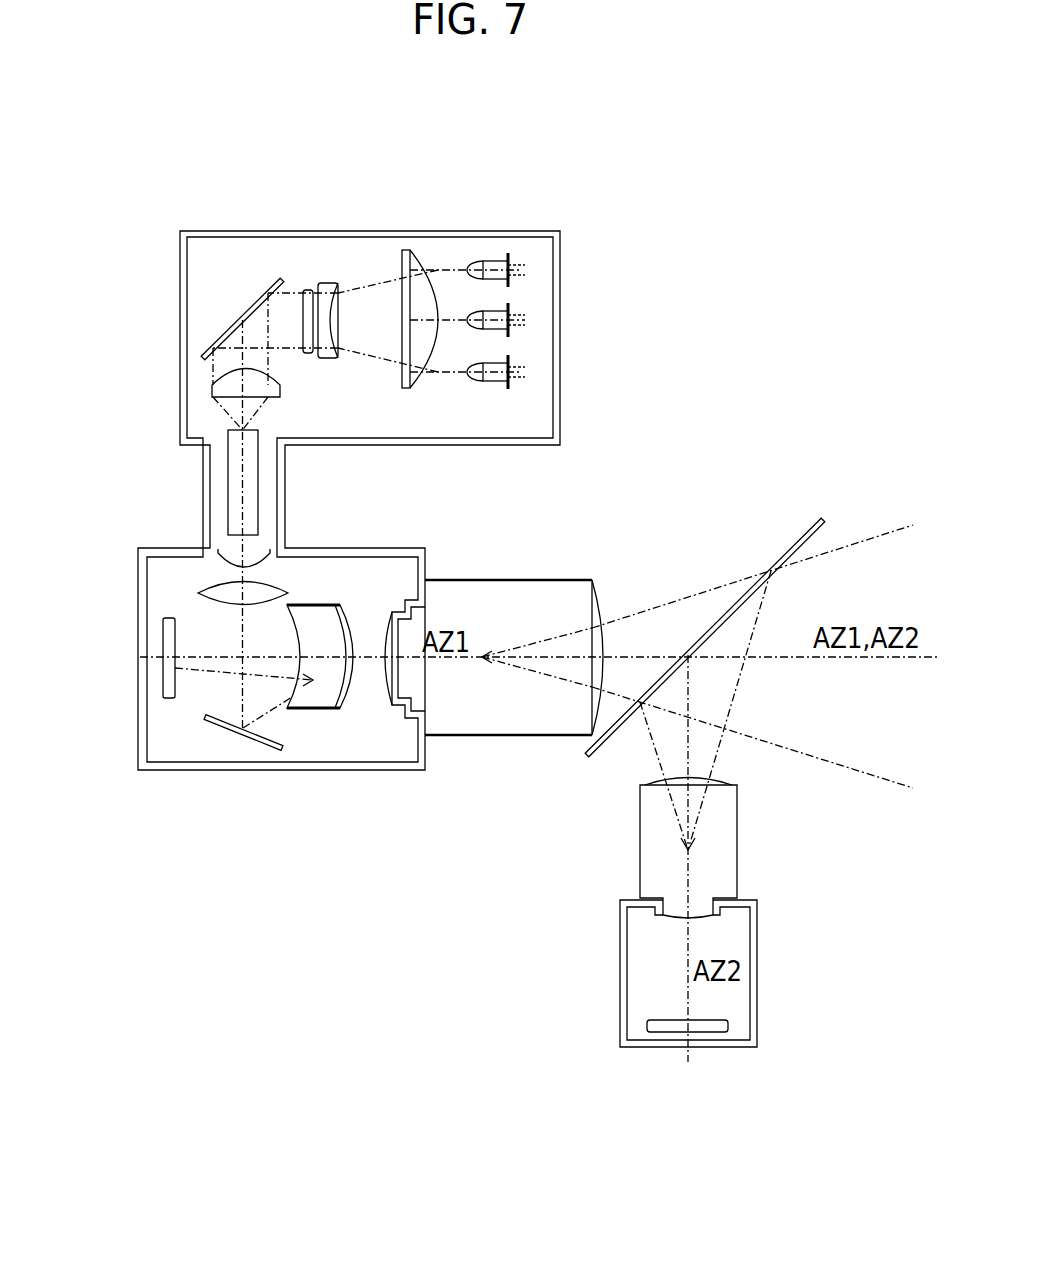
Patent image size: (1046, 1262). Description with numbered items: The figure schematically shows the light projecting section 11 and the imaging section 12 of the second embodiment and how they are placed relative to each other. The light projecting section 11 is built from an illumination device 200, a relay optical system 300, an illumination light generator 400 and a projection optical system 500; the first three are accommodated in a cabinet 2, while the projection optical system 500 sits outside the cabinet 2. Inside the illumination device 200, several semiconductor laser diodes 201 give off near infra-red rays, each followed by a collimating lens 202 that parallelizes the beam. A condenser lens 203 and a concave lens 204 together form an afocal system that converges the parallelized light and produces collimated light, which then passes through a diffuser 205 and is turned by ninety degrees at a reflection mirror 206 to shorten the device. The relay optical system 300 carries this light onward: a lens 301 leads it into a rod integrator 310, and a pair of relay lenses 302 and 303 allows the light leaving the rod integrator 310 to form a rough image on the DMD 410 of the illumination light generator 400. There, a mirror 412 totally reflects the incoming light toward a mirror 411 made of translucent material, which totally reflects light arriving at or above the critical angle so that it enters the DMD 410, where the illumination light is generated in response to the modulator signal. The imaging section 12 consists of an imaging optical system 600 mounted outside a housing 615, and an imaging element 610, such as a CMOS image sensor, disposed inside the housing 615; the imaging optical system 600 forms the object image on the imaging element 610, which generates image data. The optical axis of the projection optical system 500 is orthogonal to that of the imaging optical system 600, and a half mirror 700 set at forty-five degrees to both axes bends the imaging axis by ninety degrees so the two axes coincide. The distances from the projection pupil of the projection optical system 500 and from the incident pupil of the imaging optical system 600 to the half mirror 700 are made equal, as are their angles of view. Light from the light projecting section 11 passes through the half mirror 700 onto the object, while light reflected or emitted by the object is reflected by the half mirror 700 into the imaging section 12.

The cabinet 2 is at (180, 292).
The light projecting section 11 is at (545, 205).
The imaging section 12 is at (618, 943).
The illumination device 200 is at (587, 339).
The semiconductor laser diode 201 is at (497, 381).
The lens 202 is at (472, 380).
The lens 203 is at (417, 250).
The lens 204 is at (334, 283).
The diffuser 205 is at (308, 290).
The reflection mirror 206 is at (264, 292).
The relay optical system 300 is at (78, 395).
The lens 301 is at (215, 390).
The rod integrator 310 is at (228, 484).
The lens 302 is at (218, 556).
The lens 303 is at (225, 590).
The illumination light generator 400 is at (78, 610).
The DMD 410 is at (166, 648).
The mirror 411 is at (308, 622).
The mirror 412 is at (205, 719).
The projection optical system 500 is at (545, 585).
The imaging optical system 600 is at (738, 850).
The imaging element 610 is at (655, 1035).
The housing 615 is at (757, 948).
The half mirror 700 is at (808, 532).